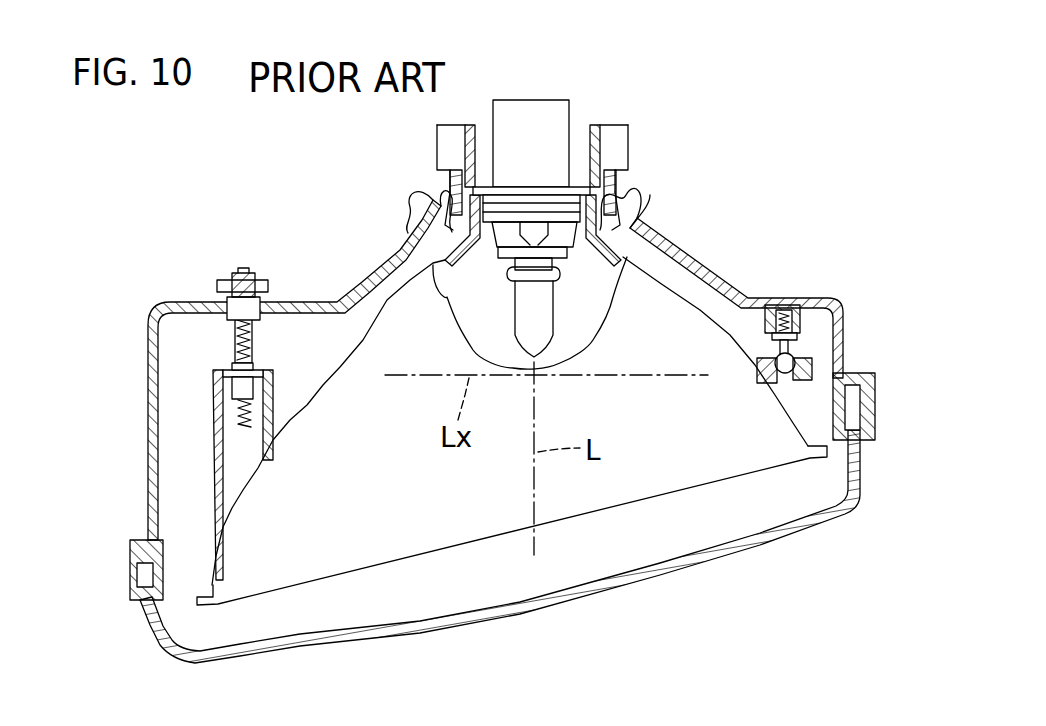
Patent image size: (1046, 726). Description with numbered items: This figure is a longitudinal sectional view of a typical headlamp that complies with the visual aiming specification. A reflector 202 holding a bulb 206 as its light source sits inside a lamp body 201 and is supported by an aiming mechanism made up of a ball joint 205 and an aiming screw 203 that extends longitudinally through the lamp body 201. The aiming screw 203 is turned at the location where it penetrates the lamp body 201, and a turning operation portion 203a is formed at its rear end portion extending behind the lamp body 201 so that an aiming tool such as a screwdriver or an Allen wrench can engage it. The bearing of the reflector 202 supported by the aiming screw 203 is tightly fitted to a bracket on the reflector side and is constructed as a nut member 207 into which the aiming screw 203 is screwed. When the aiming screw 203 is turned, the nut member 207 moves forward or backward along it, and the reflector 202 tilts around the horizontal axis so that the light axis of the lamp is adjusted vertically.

The lamp body 201 is at (673, 242).
The reflector 202 is at (697, 288).
The aiming screw 203 is at (232, 343).
The turning operation portion 203a is at (246, 271).
The ball joint 205 is at (801, 347).
The bulb 206 is at (553, 320).
The nut member 207 is at (267, 383).